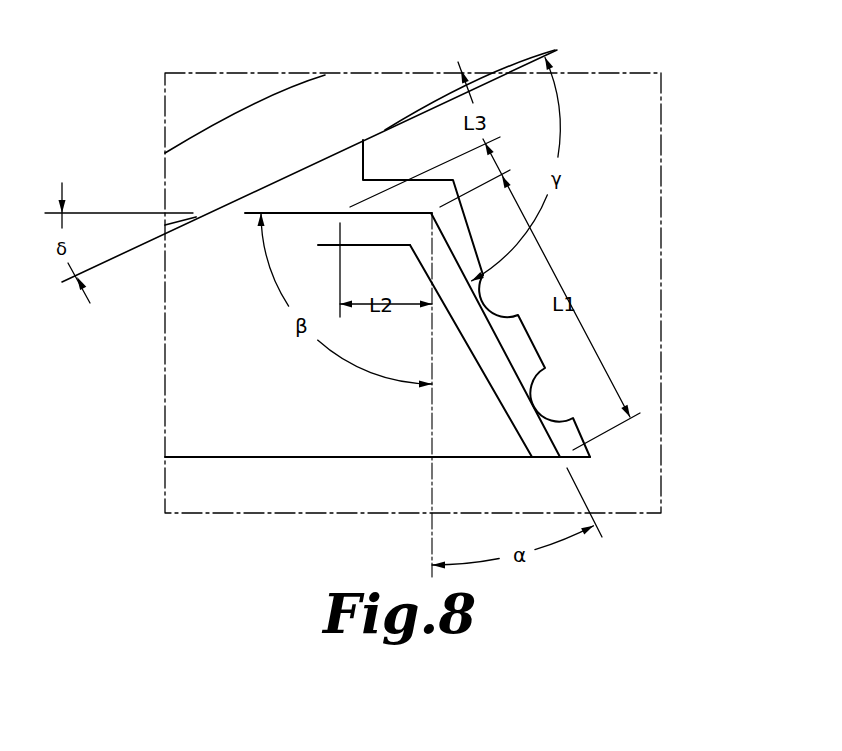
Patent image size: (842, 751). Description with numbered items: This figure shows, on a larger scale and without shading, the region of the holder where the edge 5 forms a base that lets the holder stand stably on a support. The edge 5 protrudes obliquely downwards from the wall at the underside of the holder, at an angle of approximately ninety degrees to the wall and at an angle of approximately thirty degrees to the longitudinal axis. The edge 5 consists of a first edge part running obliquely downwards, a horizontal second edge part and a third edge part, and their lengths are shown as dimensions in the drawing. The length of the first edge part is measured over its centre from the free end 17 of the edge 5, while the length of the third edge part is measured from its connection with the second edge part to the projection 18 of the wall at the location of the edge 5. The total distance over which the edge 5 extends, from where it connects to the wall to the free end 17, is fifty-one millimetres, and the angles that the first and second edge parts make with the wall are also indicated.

The edge 5 is at (643, 208).
The free end 17 is at (578, 457).
The projection of the wall 18 is at (318, 245).